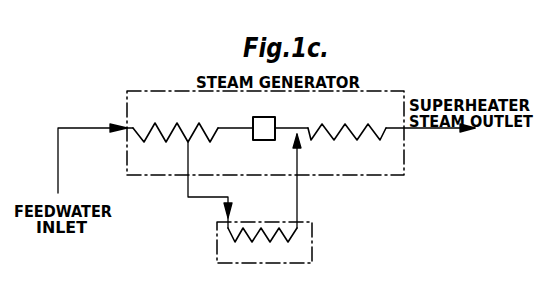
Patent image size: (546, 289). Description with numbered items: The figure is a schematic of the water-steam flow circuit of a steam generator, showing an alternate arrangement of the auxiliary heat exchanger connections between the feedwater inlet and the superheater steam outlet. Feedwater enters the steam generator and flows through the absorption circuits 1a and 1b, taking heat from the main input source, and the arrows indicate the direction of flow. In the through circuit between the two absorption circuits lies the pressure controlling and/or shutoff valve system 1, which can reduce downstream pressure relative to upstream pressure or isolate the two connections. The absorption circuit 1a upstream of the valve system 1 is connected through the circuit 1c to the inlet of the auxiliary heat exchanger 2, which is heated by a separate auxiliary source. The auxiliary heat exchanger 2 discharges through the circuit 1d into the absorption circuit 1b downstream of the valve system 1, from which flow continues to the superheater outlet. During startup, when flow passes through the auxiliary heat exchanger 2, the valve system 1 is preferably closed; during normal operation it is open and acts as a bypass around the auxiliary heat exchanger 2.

The pressure controlling and/or shutoff valve system 1 is at (275, 116).
The absorption circuit 1a is at (166, 136).
The absorption circuit 1b is at (357, 134).
The circuit 1c is at (187, 196).
The circuit 1d is at (298, 198).
The auxiliary heat exchanger 2 is at (313, 245).